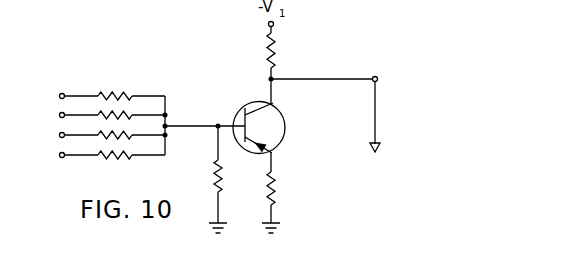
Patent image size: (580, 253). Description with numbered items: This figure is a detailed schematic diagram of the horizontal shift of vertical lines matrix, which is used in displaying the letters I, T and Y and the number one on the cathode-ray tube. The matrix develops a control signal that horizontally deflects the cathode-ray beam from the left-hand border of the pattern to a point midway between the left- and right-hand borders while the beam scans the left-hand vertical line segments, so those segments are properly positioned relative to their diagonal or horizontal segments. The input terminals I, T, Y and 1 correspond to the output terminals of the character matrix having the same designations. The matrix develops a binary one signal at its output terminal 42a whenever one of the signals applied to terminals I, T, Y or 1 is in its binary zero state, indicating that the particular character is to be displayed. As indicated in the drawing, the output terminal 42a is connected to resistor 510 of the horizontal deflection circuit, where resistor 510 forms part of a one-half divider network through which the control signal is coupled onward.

The output terminal 42a is at (377, 72).
The resistor 510 is at (369, 130).
The input terminal I is at (104, 97).
The input terminal T is at (104, 116).
The input terminal Y is at (104, 136).
The input terminal 1 is at (105, 156).